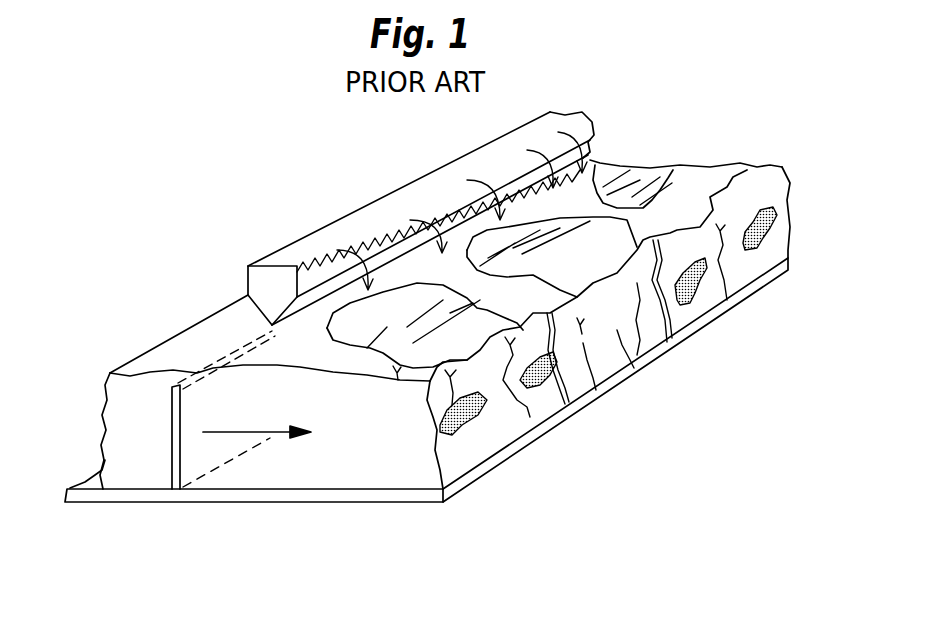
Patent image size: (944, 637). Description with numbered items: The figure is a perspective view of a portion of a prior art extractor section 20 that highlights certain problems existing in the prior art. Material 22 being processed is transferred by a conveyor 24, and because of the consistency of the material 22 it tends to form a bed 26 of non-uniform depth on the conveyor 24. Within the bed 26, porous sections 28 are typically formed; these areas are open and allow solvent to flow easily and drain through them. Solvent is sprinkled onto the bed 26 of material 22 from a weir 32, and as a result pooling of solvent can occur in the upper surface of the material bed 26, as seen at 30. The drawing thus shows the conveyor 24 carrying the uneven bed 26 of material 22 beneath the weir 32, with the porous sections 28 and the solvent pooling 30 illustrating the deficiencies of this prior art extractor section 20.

The extractor section 20 is at (240, 504).
The material 22 is at (377, 457).
The conveyor 24 is at (335, 500).
The bed 26 is at (457, 258).
The porous sections 28 is at (543, 383).
The pooling of solvent 30 is at (393, 300).
The weir 32 is at (263, 280).